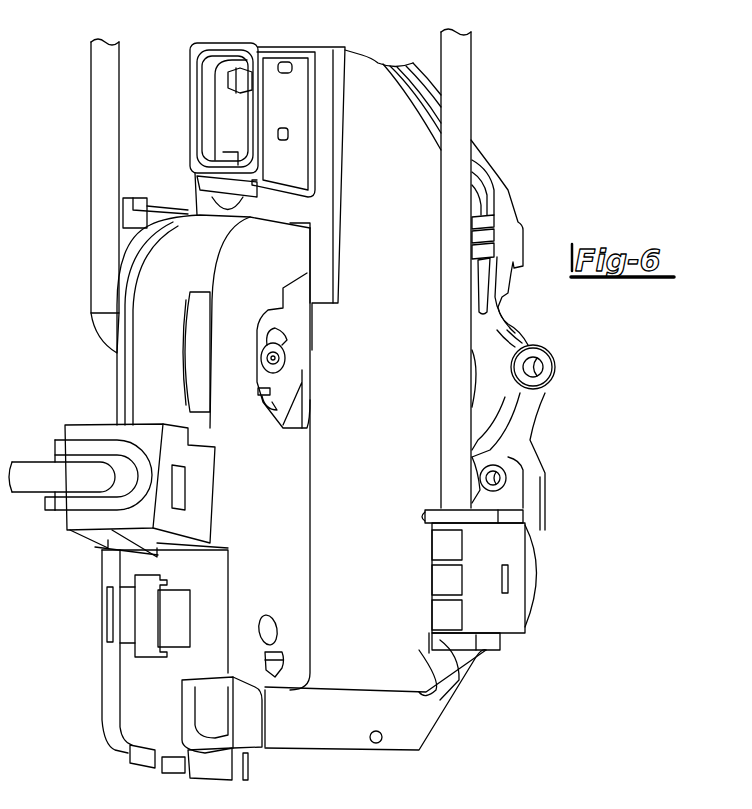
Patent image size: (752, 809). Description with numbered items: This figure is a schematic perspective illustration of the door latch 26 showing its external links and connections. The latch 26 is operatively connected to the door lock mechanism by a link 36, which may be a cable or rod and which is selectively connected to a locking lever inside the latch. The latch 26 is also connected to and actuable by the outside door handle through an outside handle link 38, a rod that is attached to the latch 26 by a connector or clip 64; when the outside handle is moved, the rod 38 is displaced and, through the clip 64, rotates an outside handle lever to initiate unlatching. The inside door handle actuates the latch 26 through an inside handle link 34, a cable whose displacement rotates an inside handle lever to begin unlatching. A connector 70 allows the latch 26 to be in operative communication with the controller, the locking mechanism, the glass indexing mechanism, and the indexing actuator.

The door latch 26 is at (598, 124).
The inside handle link 34 is at (44, 466).
The link 36 is at (91, 94).
The outside handle link 38 is at (471, 76).
The connector or clip 64 is at (503, 542).
The connector 70 is at (221, 43).